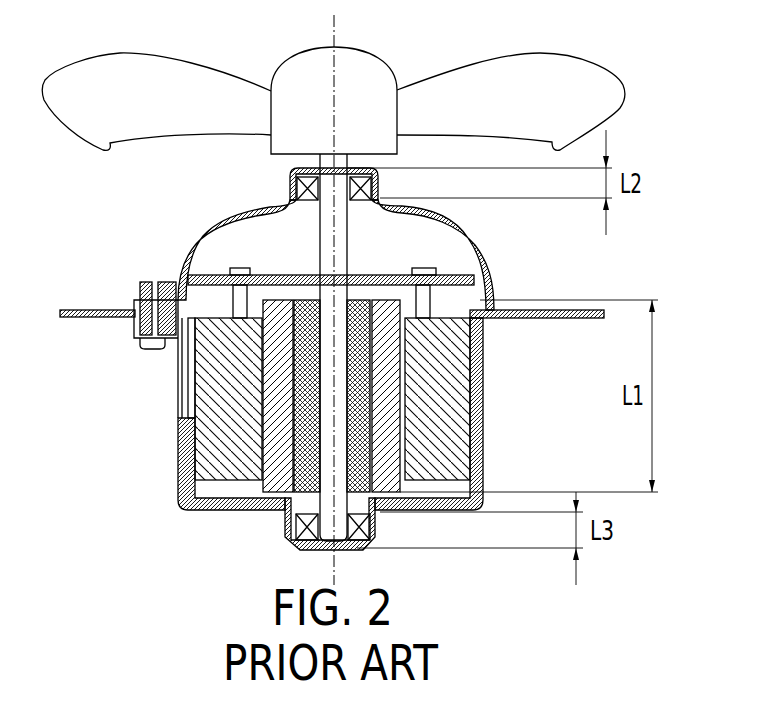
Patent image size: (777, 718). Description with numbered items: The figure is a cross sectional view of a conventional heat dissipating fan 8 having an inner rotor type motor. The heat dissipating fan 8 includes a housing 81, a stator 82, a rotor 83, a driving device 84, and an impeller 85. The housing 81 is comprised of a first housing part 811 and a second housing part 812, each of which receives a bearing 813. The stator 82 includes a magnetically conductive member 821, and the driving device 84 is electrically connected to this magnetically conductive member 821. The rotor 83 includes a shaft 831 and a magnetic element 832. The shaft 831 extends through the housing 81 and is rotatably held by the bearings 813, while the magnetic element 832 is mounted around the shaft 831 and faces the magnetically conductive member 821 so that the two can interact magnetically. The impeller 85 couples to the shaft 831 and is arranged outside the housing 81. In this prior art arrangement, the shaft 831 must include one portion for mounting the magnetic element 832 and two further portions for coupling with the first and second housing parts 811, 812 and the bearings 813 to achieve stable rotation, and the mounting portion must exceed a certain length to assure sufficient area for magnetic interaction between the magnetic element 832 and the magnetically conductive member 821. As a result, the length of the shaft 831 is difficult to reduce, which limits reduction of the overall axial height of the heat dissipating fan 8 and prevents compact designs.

The heat dissipating fan 8 is at (640, 100).
The impeller 85 is at (496, 60).
The housing 81 is at (496, 245).
The first housing part 811 is at (487, 268).
The second housing part 812 is at (485, 400).
The bearing 813 is at (358, 178).
The stator 82 is at (200, 302).
The magnetically conductive member 821 is at (193, 397).
The rotor 83 is at (288, 290).
The shaft 831 is at (320, 227).
The magnetic element 832 is at (278, 495).
The driving device 84 is at (217, 274).